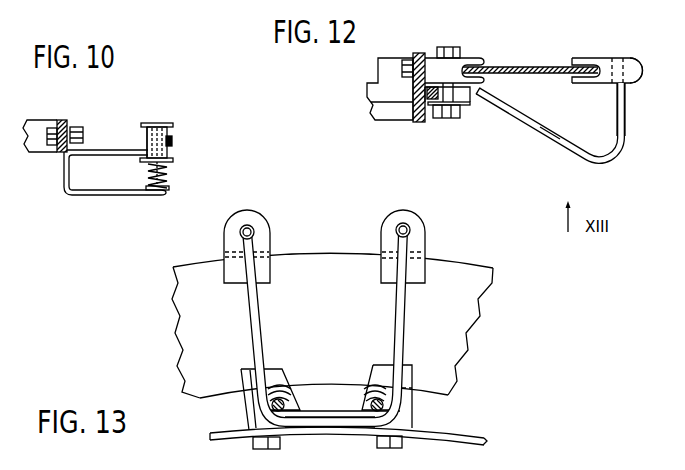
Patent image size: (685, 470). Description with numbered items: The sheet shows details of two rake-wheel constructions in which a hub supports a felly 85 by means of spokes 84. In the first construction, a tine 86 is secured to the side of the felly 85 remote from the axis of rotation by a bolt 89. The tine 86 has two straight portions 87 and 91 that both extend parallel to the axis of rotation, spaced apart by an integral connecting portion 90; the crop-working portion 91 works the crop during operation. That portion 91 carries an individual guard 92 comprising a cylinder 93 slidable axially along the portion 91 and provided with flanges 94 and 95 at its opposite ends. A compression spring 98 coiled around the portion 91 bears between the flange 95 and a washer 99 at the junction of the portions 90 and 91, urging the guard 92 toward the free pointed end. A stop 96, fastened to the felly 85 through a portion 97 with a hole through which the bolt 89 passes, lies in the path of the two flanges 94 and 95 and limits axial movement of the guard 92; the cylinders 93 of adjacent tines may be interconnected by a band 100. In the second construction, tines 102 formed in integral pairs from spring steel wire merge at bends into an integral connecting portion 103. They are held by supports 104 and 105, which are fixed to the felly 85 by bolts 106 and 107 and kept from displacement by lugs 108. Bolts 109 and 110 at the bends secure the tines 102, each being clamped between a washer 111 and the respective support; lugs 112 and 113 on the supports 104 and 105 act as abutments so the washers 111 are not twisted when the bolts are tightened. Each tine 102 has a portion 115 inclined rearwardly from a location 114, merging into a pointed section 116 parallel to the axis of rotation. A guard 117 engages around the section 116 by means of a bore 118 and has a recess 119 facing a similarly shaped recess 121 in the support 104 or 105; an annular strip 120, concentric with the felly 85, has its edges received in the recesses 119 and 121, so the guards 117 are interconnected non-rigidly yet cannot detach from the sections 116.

In FIG. 12, the spokes 84 is at (378, 98).
In FIG. 10, the felly 85 is at (59, 119).
In FIG. 12, the felly 85 is at (420, 122).
In FIG. 13, the felly 85 is at (477, 435).
In FIG. 10, the tine 86 is at (99, 180).
In FIG. 10, the straight portion 87 is at (63, 172).
In FIG. 10, the bolt 89 is at (46, 146).
In FIG. 10, the connecting portion 90 is at (130, 195).
In FIG. 10, the crop-working portion 91 is at (148, 174).
In FIG. 10, the guard 92 is at (161, 149).
In FIG. 10, the cylinder 93 is at (146, 137).
In FIG. 10, the flange 94 is at (153, 123).
In FIG. 10, the flange 95 is at (174, 159).
In FIG. 10, the stop 96 is at (100, 149).
In FIG. 10, the portion 97 is at (70, 120).
In FIG. 10, the compression spring 98 is at (168, 173).
In FIG. 10, the washer 99 is at (167, 190).
In FIG. 10, the band 100 is at (172, 137).
In FIG. 12, the tines 102 is at (526, 131).
In FIG. 13, the tines 102 is at (264, 335).
In FIG. 13, the connecting portion 103 is at (338, 432).
In FIG. 13, the support 104 is at (250, 416).
In FIG. 13, the support 105 is at (408, 418).
In FIG. 13, the bolt 106 is at (256, 446).
In FIG. 13, the bolt 107 is at (401, 446).
In FIG. 12, the lugs 108 is at (420, 53).
In FIG. 13, the bolt 109 is at (295, 397).
In FIG. 13, the bolt 110 is at (366, 407).
In FIG. 12, the washer 111 is at (462, 107).
In FIG. 13, the lug 112 is at (278, 389).
In FIG. 12, the lug 113 is at (471, 101).
In FIG. 13, the lug 113 is at (372, 392).
In FIG. 12, the location 114 is at (489, 94).
In FIG. 12, the portion 115 is at (557, 140).
In FIG. 12, the pointed section 116 is at (627, 118).
In FIG. 12, the guard 117 is at (642, 70).
In FIG. 13, the guard 117 is at (264, 226).
In FIG. 12, the bore 118 is at (619, 52).
In FIG. 13, the bore 118 is at (411, 232).
In FIG. 12, the recess 119 is at (584, 58).
In FIG. 12, the annular strip 120 is at (507, 67).
In FIG. 13, the annular strip 120 is at (469, 332).
In FIG. 12, the recess 121 is at (468, 57).